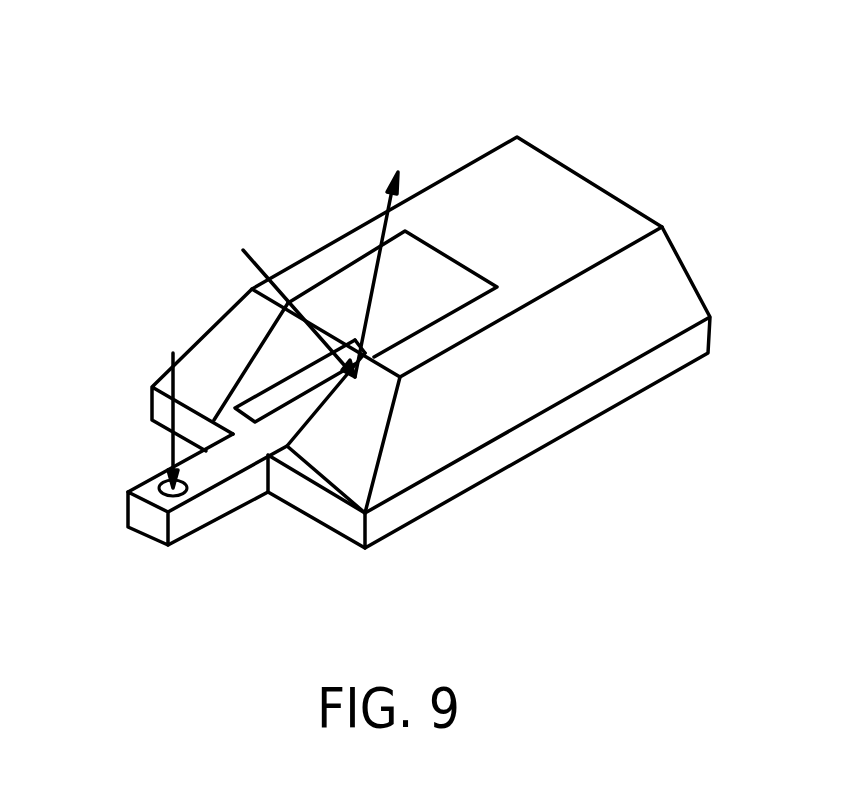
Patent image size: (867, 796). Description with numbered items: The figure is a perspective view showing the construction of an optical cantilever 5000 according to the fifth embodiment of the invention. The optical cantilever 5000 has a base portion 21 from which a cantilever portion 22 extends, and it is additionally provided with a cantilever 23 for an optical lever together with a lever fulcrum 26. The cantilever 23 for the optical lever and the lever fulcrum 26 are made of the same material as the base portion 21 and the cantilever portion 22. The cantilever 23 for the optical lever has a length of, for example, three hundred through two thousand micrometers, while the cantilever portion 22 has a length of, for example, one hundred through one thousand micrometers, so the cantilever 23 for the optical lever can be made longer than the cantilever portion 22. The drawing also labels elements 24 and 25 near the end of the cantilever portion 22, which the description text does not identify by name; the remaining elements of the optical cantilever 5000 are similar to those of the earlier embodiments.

The optical cantilever 5000 is at (578, 21).
The base portion 21 is at (588, 210).
The cantilever portion 22 is at (213, 472).
The cantilever for an optical lever 23 is at (317, 410).
The end portion of tab 24 is at (180, 548).
The hole 25 is at (163, 482).
The lever fulcrum 26 is at (240, 428).